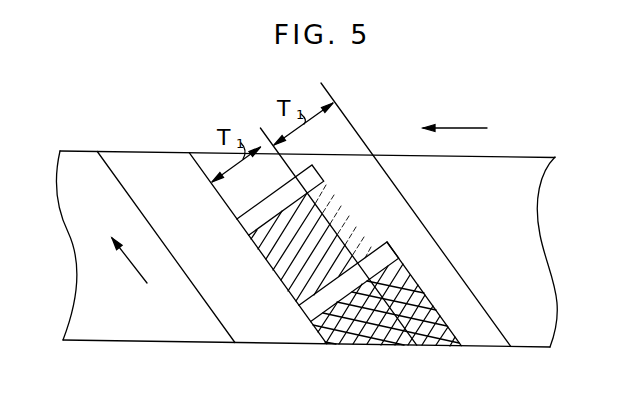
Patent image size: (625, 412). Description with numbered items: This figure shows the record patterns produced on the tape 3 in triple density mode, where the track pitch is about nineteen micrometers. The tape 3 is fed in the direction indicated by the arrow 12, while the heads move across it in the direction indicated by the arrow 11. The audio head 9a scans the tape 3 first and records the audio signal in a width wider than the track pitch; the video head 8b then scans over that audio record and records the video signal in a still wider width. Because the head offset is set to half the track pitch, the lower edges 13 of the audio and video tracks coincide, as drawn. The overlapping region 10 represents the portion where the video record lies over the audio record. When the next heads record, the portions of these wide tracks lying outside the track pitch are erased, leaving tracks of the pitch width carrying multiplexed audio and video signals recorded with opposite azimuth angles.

The tape 3 is at (548, 253).
The video head 8b is at (303, 306).
The audio head 9a is at (252, 207).
The overlapping recorded region 10 is at (364, 338).
The arrow 11 is at (147, 283).
The arrow 12 is at (466, 127).
The lower edges of the audio and video tracks 13 is at (275, 274).